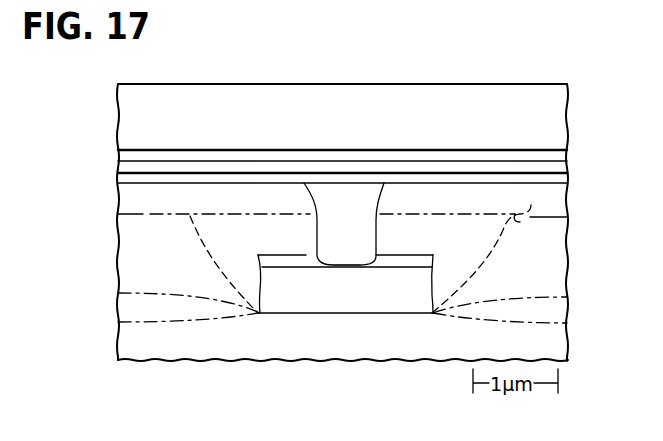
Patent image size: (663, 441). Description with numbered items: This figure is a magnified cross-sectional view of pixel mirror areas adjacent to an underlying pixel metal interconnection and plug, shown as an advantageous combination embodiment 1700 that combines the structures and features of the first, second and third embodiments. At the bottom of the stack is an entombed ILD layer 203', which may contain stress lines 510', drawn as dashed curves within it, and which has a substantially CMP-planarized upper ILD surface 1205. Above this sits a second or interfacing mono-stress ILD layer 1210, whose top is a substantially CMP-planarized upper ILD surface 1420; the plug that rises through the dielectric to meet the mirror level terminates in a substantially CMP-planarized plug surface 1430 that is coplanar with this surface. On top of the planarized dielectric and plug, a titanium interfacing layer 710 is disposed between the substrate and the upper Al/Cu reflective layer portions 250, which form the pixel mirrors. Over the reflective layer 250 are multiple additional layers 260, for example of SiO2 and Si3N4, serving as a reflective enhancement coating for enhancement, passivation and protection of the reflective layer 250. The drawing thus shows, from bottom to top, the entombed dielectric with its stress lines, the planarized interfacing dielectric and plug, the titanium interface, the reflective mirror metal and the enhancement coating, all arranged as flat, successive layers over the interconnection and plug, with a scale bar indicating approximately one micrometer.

The entombed ILD layer 203' is at (342, 189).
The planarized upper ILD surface 1205 is at (178, 213).
The planarized upper ILD surface 1420 is at (242, 183).
The titanium interfacing layer 710 is at (288, 178).
The combination embodiment 1700 is at (366, 72).
The planarized plug surface 1430 is at (358, 185).
The additional layers 260 is at (400, 157).
The interfacing ILD layer 1210 is at (411, 198).
The reflective layer 250 is at (472, 168).
The stress lines 510' is at (390, 184).